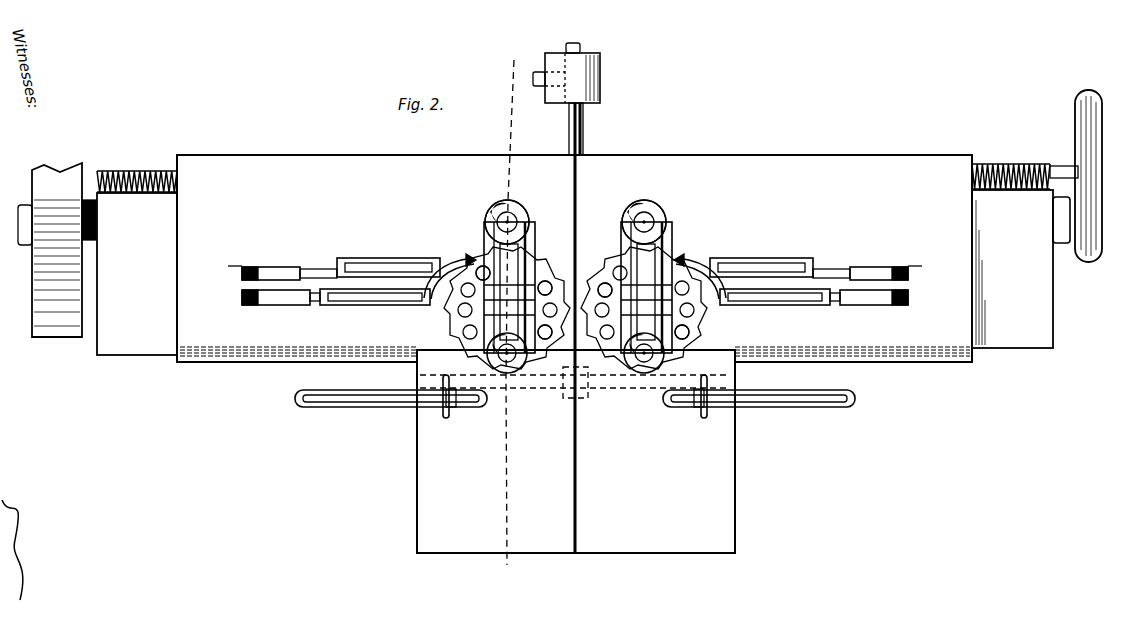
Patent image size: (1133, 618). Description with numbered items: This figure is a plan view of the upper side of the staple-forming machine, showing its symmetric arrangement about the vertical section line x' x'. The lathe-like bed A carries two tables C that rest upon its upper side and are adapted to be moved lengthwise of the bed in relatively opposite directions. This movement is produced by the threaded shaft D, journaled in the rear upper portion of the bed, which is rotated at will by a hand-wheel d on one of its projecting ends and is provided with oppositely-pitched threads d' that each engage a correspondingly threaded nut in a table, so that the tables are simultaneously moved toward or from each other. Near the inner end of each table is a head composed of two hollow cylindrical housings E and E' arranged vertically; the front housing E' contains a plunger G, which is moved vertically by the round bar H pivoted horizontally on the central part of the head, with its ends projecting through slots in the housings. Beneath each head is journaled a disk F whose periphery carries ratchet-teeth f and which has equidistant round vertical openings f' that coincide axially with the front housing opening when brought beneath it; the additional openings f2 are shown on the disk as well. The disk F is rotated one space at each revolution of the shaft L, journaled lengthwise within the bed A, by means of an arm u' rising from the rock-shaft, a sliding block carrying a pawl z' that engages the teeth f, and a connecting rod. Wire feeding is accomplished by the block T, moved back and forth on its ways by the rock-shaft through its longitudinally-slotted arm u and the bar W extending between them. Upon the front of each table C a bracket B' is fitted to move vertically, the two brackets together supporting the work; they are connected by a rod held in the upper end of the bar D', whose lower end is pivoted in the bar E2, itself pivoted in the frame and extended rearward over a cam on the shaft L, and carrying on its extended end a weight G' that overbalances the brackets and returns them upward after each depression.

The section line x' x' is at (508, 313).
The weight G' is at (581, 73).
The bar E2 is at (572, 120).
The plunger G is at (573, 219).
The hollow cylindrical housing E is at (575, 285).
The round bar H is at (530, 250).
The disk F is at (448, 320).
The ratchet-teeth f is at (561, 295).
The round vertical openings f' is at (585, 288).
The pin f2 is at (558, 322).
The block T is at (575, 272).
The pawl z' is at (575, 263).
The bar W is at (358, 268).
The longitudinally-slotted arm u is at (575, 280).
The arm u' is at (575, 309).
The table C is at (574, 258).
The threaded shaft D is at (137, 194).
The bar D' is at (1011, 189).
The hand-wheel d is at (1089, 176).
The oppositely-pitched threads d' is at (612, 160).
The shaft L is at (96, 218).
The bed A is at (575, 272).
The bracket B' is at (576, 451).
The hollow cylindrical housing E' is at (575, 382).